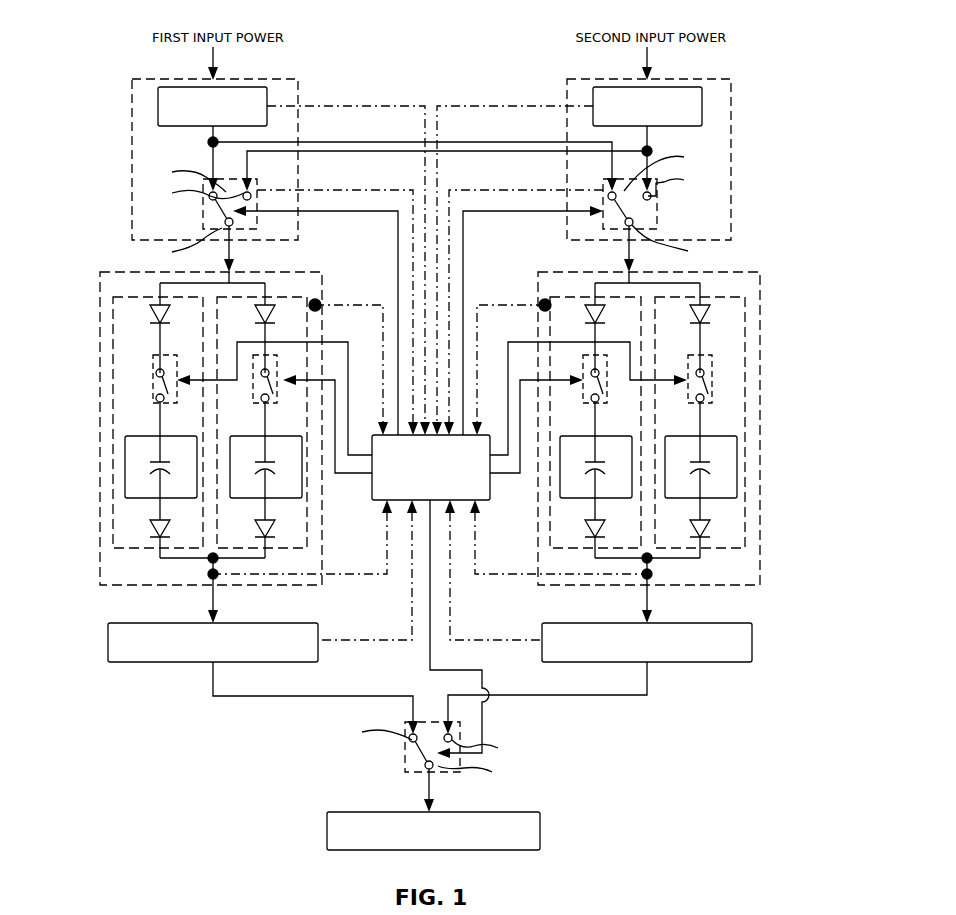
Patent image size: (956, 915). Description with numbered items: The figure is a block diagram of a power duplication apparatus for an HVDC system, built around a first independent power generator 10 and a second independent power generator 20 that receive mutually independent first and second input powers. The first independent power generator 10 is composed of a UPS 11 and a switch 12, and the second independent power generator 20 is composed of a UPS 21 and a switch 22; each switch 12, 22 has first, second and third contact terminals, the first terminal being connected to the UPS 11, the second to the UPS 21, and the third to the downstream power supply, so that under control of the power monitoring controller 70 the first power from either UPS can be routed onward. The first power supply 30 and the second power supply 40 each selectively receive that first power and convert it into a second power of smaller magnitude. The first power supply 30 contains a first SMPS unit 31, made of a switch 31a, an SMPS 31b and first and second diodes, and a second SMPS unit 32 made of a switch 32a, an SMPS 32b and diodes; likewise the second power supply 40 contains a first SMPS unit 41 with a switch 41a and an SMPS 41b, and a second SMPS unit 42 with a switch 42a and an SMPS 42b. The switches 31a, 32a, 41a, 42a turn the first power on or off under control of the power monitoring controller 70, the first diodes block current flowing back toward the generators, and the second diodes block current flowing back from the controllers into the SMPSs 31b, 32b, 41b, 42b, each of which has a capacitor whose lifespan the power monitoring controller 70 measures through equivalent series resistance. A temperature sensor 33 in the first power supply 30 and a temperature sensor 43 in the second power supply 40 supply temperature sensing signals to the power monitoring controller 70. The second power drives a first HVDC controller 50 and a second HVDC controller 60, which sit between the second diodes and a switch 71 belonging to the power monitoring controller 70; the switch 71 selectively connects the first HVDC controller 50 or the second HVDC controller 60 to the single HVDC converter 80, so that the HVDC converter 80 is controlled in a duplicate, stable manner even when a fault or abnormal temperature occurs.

The first independent power generator 10 is at (132, 160).
The UPS 11 is at (158, 105).
The switch 12 is at (202, 213).
The second independent power generator 20 is at (731, 140).
The UPS 21 is at (702, 107).
The switch 22 is at (657, 212).
The first power supply 30 is at (100, 314).
The first SMPS unit 31 is at (110, 351).
The switch 31a is at (148, 378).
The SMPS 31b is at (124, 460).
The second SMPS unit 32 is at (224, 292).
The switch 32a is at (245, 398).
The SMPS 32b is at (228, 484).
The temperature sensor 33 is at (321, 300).
The second power supply 40 is at (760, 305).
The first SMPS unit 41 is at (641, 330).
The switch 41a is at (607, 362).
The SMPS 41b is at (632, 436).
The second SMPS unit 42 is at (745, 290).
The switch 42a is at (712, 380).
The SMPS 42b is at (737, 456).
The temperature sensor 43 is at (542, 300).
The first HVDC controller 50 is at (108, 648).
The second HVDC controller 60 is at (752, 642).
The power monitoring controller 70 is at (372, 488).
The switch 71 is at (406, 752).
The HVDC converter 80 is at (327, 832).